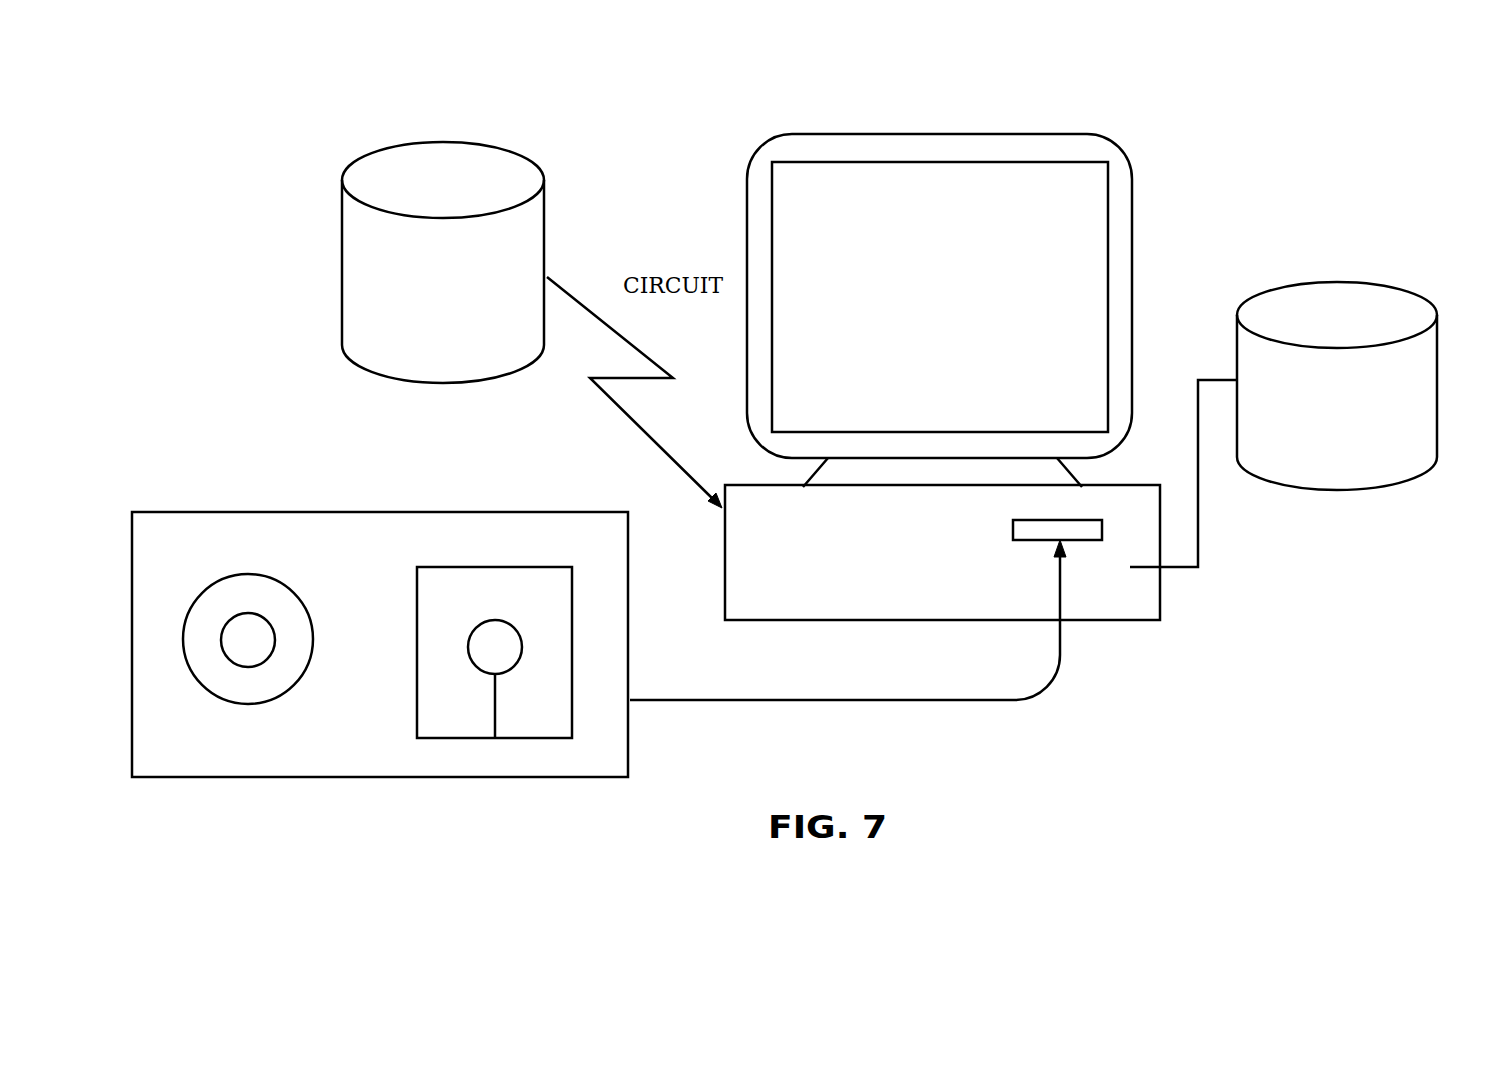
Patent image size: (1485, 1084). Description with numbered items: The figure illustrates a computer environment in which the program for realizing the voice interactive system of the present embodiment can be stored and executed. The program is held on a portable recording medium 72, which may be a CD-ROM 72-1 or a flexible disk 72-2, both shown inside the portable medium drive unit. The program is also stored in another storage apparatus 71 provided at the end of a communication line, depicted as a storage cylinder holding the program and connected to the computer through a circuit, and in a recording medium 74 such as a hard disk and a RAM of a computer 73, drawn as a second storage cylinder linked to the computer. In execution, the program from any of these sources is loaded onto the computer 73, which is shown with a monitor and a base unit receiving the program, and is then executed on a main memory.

The storage apparatus 71 is at (527, 158).
The portable recording medium 72 is at (263, 512).
The CD-ROM 72-1 is at (240, 620).
The flexible disk 72-2 is at (496, 636).
The computer 73 is at (1057, 133).
The recording medium 74 is at (1353, 280).